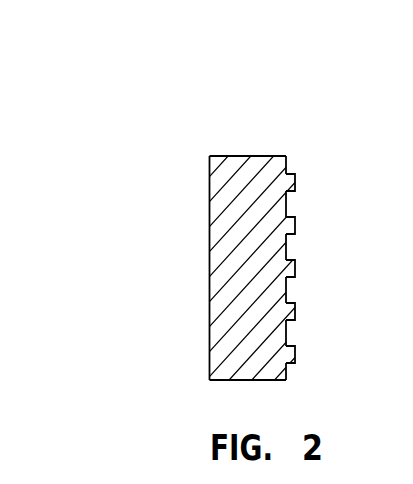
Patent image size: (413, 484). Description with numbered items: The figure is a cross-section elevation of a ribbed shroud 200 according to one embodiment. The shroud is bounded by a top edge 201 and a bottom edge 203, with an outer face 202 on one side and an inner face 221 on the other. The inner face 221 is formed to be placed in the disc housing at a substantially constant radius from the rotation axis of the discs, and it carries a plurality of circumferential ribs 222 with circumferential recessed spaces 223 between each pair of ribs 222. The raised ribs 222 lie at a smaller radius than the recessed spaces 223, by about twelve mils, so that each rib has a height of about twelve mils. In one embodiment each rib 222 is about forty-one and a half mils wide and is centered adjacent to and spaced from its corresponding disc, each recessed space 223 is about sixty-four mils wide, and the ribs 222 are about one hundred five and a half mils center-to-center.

The ribbed shroud 200 is at (329, 121).
The top edge 201 is at (245, 156).
The outer face 202 is at (209, 263).
The bottom surface 203 is at (247, 380).
The inner face 221 is at (287, 379).
The circumferential ribs 222 is at (295, 180).
The circumferential recessed spaces 223 is at (286, 203).